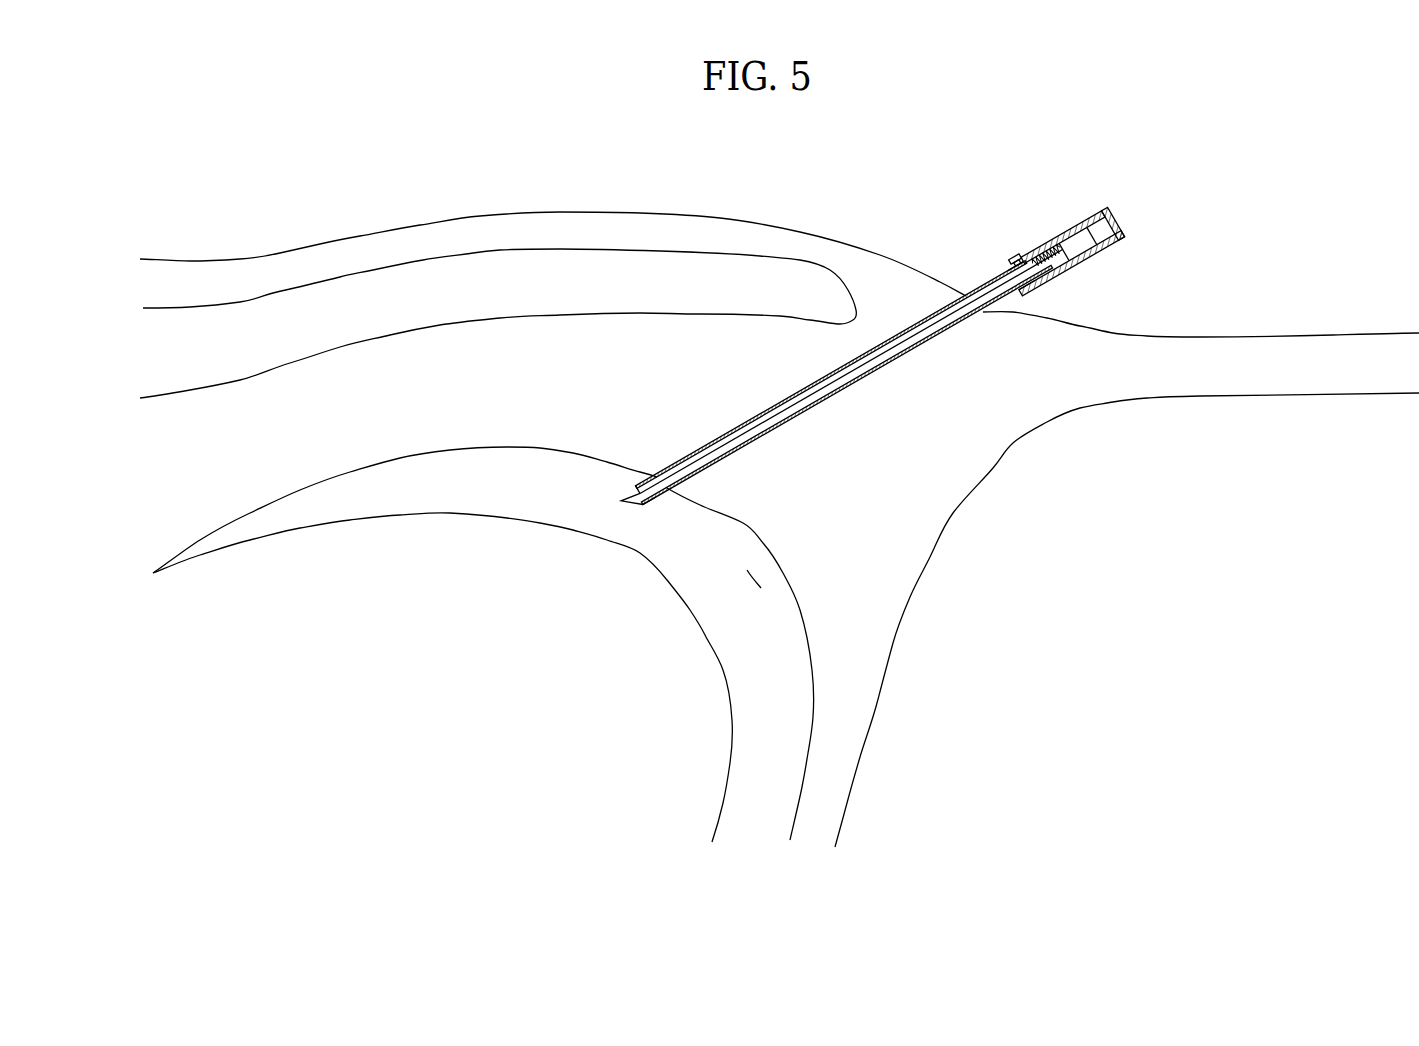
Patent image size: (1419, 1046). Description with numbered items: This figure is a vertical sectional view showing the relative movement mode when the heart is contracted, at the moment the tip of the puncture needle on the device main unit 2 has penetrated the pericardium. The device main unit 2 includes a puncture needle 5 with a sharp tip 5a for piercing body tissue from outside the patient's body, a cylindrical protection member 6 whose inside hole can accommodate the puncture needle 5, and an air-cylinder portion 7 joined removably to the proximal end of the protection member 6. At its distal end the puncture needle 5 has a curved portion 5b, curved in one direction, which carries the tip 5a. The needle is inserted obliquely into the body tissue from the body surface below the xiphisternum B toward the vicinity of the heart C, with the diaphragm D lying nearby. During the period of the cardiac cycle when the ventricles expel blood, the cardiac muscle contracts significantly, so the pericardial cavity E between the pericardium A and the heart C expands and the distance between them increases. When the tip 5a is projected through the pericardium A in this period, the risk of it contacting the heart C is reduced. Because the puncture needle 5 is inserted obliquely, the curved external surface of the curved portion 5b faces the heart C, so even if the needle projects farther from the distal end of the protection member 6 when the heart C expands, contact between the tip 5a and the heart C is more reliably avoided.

The device main unit 2 is at (865, 365).
The puncture needle 5 is at (831, 384).
The tip 5a is at (618, 500).
The curved portion 5b is at (634, 506).
The cylindrical protection member 6 is at (928, 318).
The air-cylinder portion 7 is at (1082, 215).
The pericardium A is at (745, 523).
The xiphisternum B is at (820, 290).
The heart C is at (718, 657).
The diaphragm D is at (930, 557).
The pericardial cavity E is at (764, 596).